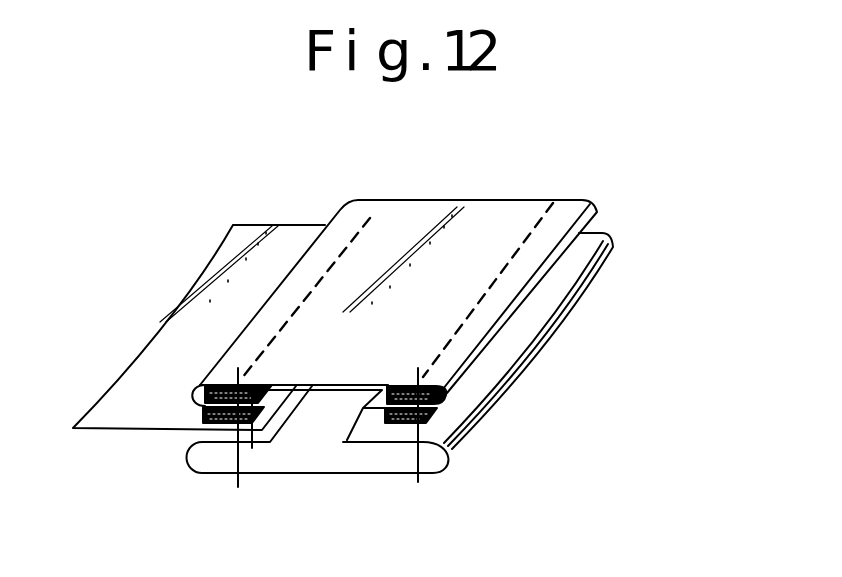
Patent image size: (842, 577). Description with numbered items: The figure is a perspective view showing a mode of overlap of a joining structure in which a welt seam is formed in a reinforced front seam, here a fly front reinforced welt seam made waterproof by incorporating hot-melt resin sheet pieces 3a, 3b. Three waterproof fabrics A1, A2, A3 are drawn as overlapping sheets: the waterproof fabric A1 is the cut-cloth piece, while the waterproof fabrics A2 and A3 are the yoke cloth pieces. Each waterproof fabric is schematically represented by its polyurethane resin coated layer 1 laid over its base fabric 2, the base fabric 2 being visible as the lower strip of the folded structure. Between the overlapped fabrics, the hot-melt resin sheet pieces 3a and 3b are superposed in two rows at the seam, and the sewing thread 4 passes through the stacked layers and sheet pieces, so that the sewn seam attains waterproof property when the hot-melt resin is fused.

The polyurethane resin coated layer 1 is at (382, 289).
The base fabric 2 is at (335, 457).
The hot-melt resin sheet piece 3a is at (217, 386).
The hot-melt resin sheet piece 3b is at (207, 410).
The sewing thread 4 is at (374, 213).
The waterproof fabric A1 is at (214, 252).
The waterproof fabric A2 is at (492, 201).
The waterproof fabric A3 is at (606, 233).